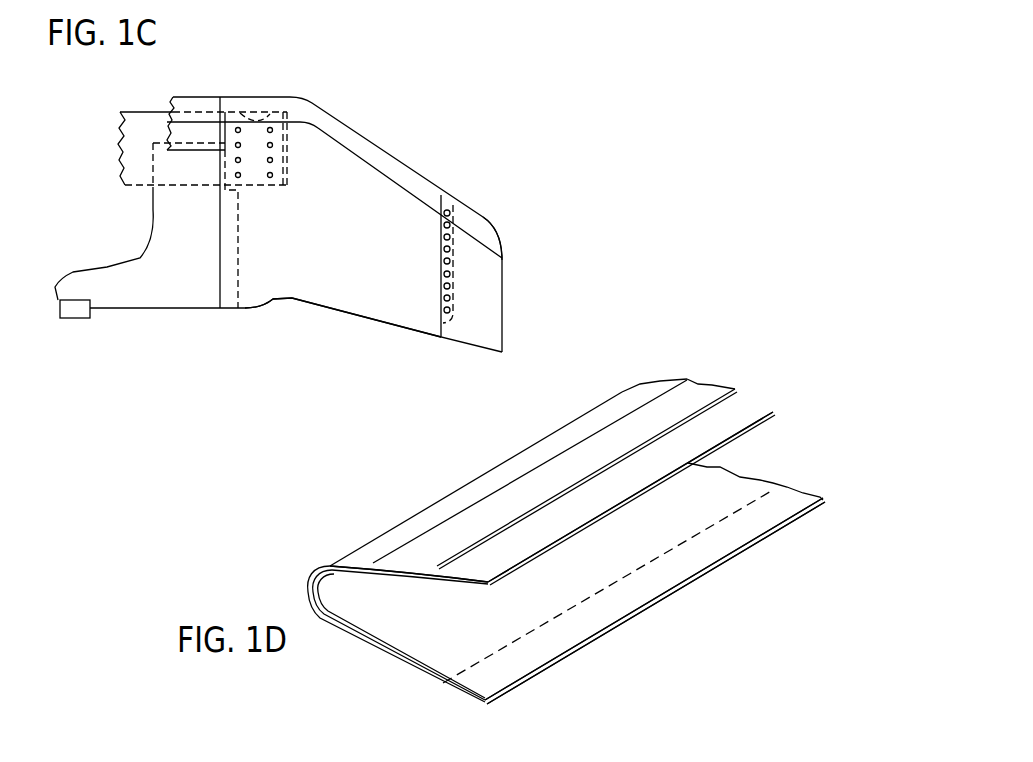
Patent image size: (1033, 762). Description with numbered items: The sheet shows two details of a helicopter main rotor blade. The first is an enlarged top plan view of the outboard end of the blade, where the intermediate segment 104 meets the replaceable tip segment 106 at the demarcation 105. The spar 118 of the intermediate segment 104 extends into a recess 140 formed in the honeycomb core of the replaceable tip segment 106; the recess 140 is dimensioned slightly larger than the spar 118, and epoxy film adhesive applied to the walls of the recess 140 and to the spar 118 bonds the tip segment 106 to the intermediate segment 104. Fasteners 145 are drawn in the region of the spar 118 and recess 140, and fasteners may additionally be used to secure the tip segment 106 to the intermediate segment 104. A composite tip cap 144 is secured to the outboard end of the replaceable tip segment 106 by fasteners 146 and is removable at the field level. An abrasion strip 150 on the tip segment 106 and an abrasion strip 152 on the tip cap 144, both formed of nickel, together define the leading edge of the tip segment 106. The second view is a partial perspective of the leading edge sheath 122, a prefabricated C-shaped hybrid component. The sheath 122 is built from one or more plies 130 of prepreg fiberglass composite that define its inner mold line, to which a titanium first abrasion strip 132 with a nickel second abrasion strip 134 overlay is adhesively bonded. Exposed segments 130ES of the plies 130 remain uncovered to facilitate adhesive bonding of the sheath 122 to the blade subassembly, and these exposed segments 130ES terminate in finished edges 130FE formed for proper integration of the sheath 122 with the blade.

In FIG. 1C, the intermediate segment 104 is at (122, 296).
In FIG. 1C, the demarcation between intermediate segment and replaceable tip segment 105 is at (240, 262).
In FIG. 1C, the replaceable tip segment 106 is at (296, 376).
In FIG. 1C, the spar 118 is at (135, 123).
In FIG. 1C, the recess 140 is at (268, 107).
In FIG. 1C, the composite tip cap 144 is at (472, 330).
In FIG. 1C, the fasteners 145 is at (240, 178).
In FIG. 1C, the fasteners 146 is at (453, 292).
In FIG. 1C, the abrasion strip 150 is at (390, 167).
In FIG. 1C, the abrasion strip 152 is at (472, 227).
In FIG. 1D, the leading edge sheath 122 is at (370, 665).
In FIG. 1D, the plies of prepreg composite material 130 is at (566, 524).
In FIG. 1D, the exposed segments 130ES is at (742, 409).
In FIG. 1D, the finished edges 130FE is at (757, 424).
In FIG. 1D, the first abrasion strip 132 is at (697, 393).
In FIG. 1D, the second abrasion strip 134 is at (637, 396).